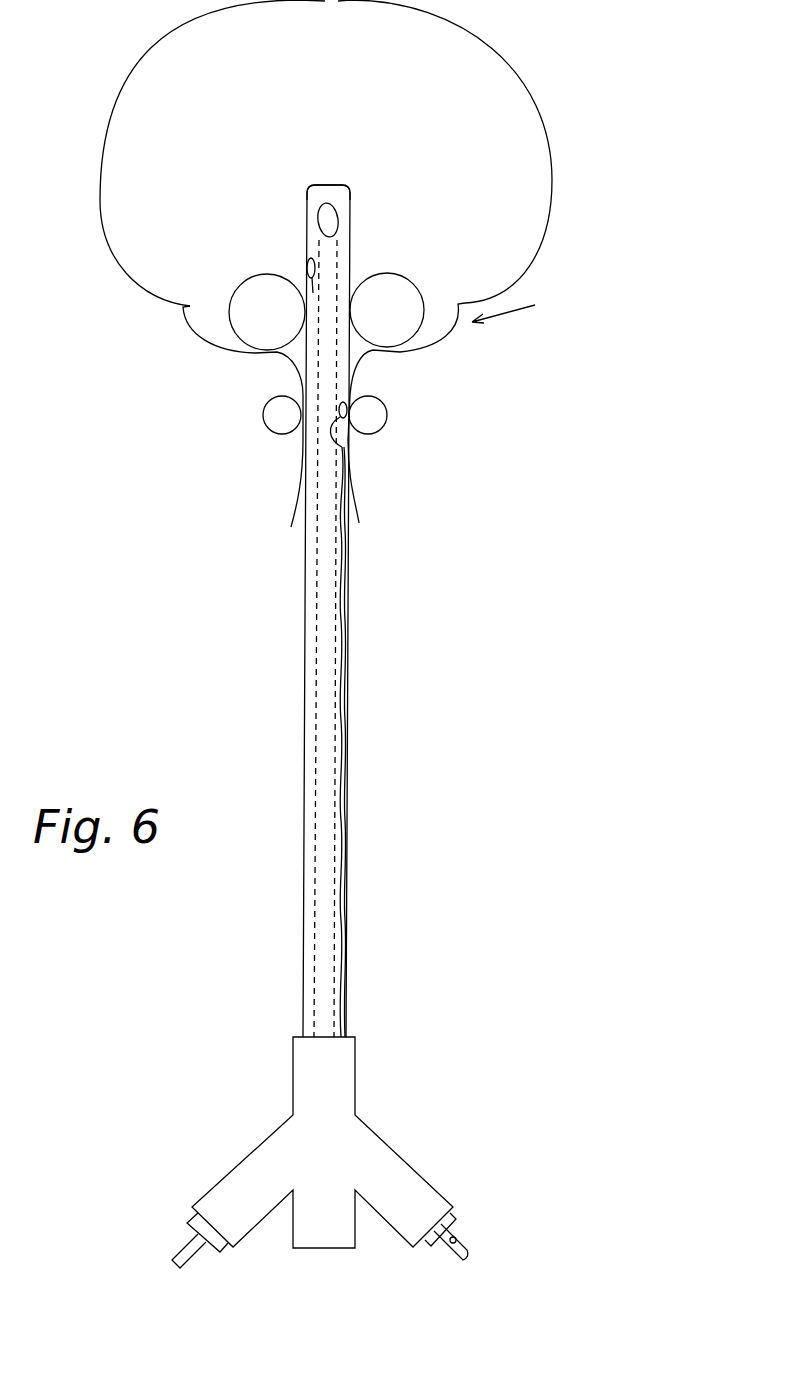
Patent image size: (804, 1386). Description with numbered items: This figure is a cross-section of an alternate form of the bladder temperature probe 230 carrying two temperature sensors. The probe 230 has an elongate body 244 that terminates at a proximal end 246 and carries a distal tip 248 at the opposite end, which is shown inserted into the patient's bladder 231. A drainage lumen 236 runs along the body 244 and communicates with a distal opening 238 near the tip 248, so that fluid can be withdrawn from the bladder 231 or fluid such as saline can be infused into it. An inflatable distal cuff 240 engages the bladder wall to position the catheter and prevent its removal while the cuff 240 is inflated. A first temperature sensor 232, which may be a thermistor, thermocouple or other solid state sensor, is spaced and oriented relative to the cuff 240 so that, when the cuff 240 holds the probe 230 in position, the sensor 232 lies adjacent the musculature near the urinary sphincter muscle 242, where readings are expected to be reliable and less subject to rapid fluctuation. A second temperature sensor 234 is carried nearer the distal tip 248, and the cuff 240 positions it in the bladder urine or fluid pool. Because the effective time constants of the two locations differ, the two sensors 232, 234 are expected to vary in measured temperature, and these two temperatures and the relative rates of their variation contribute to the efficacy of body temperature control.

The bladder temperature probe 230 is at (353, 732).
The bladder 231 is at (552, 180).
The first temperature sensor 232 is at (346, 445).
The second temperature sensor 234 is at (305, 262).
The drainage lumen 236 is at (323, 712).
The distal opening 238 is at (335, 206).
The inflatable distal cuff 240 is at (412, 275).
The urinary sphincter muscle 242 is at (408, 417).
The elongate body 244 is at (451, 840).
The proximal end 246 is at (462, 1139).
The distal tip 248 is at (322, 183).